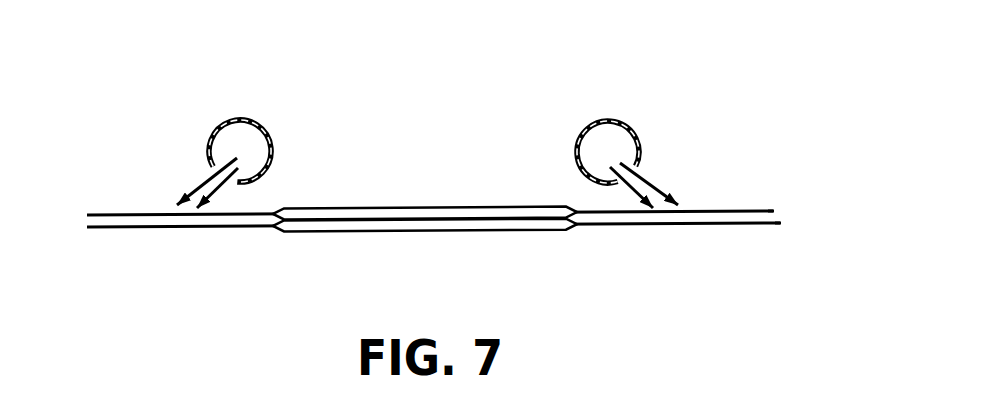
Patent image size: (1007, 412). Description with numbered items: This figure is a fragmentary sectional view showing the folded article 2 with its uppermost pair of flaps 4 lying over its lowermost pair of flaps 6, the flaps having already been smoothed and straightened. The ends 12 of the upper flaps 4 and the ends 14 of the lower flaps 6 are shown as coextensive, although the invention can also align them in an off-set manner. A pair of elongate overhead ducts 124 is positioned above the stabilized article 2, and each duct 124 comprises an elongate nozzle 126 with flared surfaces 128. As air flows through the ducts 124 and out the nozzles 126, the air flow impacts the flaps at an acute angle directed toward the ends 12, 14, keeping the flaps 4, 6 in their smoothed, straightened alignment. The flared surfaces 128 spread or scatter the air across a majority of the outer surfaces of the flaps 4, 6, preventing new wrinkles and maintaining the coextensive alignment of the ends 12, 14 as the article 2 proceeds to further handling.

The article 2 is at (413, 233).
The uppermost flaps 4 is at (122, 214).
The lowermost flaps 6 is at (167, 228).
The ends of uppermost flaps 12 is at (770, 211).
The ends of lowermost flaps 14 is at (777, 223).
The elongate overhead duct 124 is at (267, 137).
The elongate nozzle 126 is at (207, 181).
The flared surfaces 128 is at (224, 186).